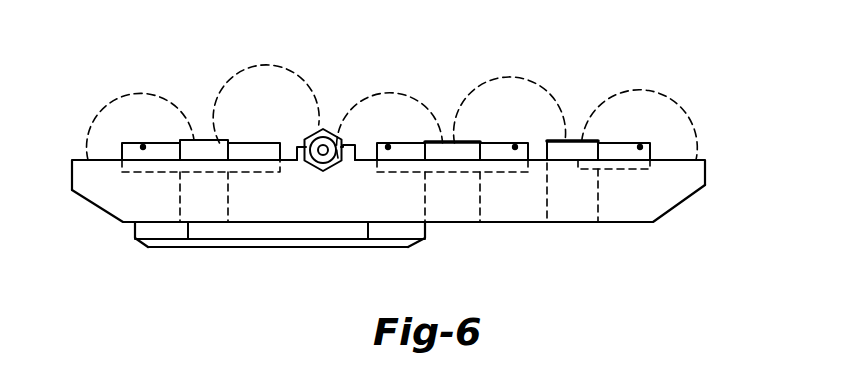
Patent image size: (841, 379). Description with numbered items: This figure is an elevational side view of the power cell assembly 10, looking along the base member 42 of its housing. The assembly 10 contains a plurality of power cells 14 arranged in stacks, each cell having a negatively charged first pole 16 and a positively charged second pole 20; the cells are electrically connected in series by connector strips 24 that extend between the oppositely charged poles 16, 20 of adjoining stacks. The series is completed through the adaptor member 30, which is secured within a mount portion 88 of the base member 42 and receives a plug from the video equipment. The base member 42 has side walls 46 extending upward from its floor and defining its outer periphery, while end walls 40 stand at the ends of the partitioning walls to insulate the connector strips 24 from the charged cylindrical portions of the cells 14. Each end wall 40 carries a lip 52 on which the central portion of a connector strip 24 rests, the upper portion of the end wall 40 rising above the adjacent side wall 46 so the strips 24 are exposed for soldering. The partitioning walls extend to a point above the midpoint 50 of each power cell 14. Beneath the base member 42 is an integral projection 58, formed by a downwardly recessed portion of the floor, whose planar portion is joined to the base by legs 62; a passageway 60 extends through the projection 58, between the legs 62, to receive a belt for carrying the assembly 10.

The power cell assembly 10 is at (86, 116).
The power cells 14 is at (154, 92).
The first pole 16 is at (134, 104).
The second pole 20 is at (258, 108).
The connector strips 24 is at (234, 148).
The adaptor member 30 is at (323, 129).
The end walls 40 is at (203, 139).
The base member 42 is at (706, 197).
The side walls 46 is at (72, 168).
The midpoint 50 is at (143, 147).
The lip 52 is at (211, 176).
The projection 58 is at (267, 248).
The passageway 60 is at (320, 229).
The legs 62 is at (132, 227).
The mount portion 88 is at (337, 137).